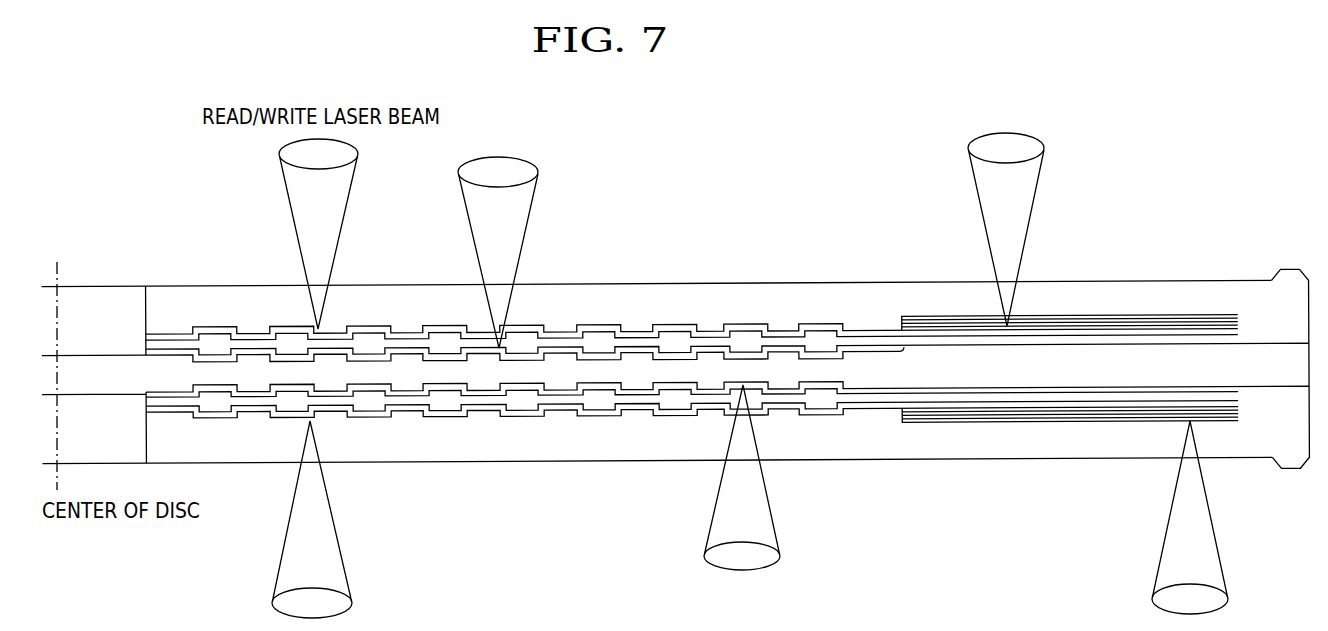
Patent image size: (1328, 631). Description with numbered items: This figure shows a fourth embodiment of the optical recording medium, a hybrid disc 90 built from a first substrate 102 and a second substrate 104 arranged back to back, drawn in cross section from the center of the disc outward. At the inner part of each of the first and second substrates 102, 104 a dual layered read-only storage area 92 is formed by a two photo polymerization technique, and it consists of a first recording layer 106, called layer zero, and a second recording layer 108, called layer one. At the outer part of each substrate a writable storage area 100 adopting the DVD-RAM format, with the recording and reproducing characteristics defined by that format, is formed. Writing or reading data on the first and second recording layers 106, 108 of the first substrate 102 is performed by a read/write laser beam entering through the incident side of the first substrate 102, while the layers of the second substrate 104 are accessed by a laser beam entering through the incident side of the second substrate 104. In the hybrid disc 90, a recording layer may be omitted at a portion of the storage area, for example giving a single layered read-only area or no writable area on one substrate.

The hybrid disc 90 is at (1272, 548).
The dual layered read-only storage area 92 is at (675, 364).
The writable storage area 100 is at (902, 314).
The first substrate 102 is at (866, 310).
The second substrate 104 is at (857, 442).
The first recording layer 106 is at (675, 418).
The second recording layer 108 is at (193, 423).